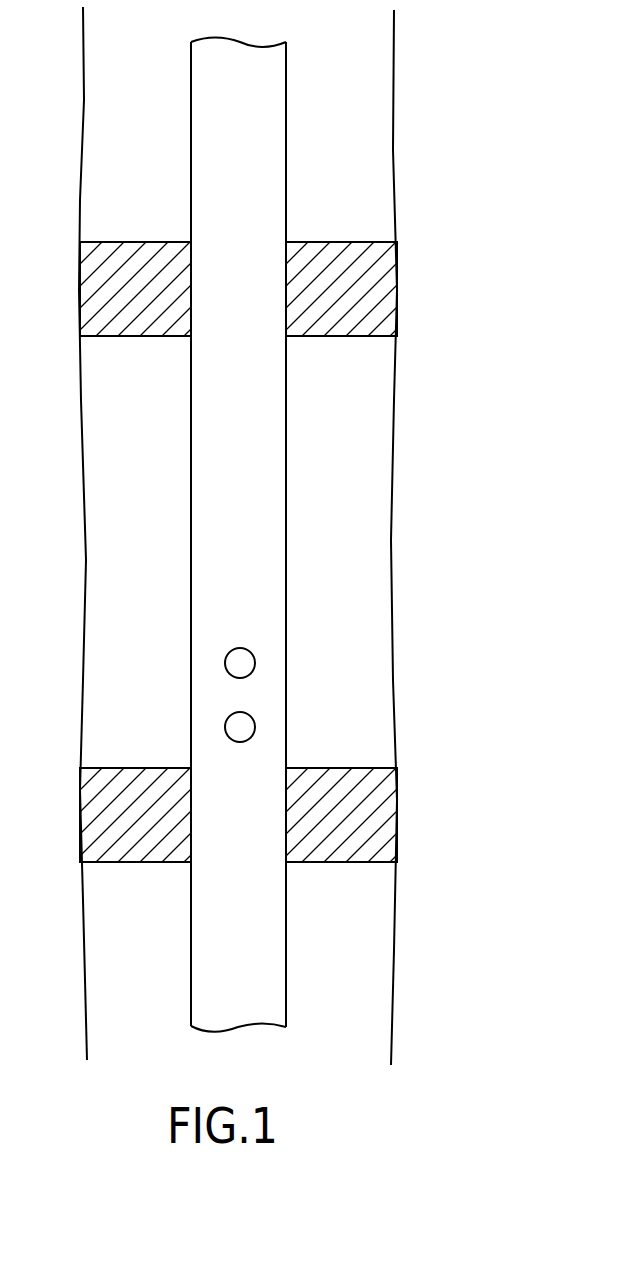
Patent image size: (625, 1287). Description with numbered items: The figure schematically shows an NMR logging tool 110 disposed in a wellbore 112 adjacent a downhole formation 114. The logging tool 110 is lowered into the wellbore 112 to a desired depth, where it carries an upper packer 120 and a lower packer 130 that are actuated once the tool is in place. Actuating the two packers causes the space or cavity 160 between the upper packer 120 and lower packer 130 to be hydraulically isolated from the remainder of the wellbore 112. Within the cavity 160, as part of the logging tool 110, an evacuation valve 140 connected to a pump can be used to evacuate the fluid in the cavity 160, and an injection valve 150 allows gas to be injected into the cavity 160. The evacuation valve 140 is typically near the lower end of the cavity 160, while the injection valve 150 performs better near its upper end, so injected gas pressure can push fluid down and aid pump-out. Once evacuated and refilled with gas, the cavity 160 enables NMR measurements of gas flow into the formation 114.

The NMR logging tool 110 is at (224, 517).
The wellbore 112 is at (104, 130).
The downhole formation 114 is at (576, 233).
The upper packer 120 is at (105, 287).
The lower packer 130 is at (95, 820).
The evacuation valve 140 is at (232, 727).
The injection valve 150 is at (232, 661).
The space (cavity) 160 is at (346, 554).